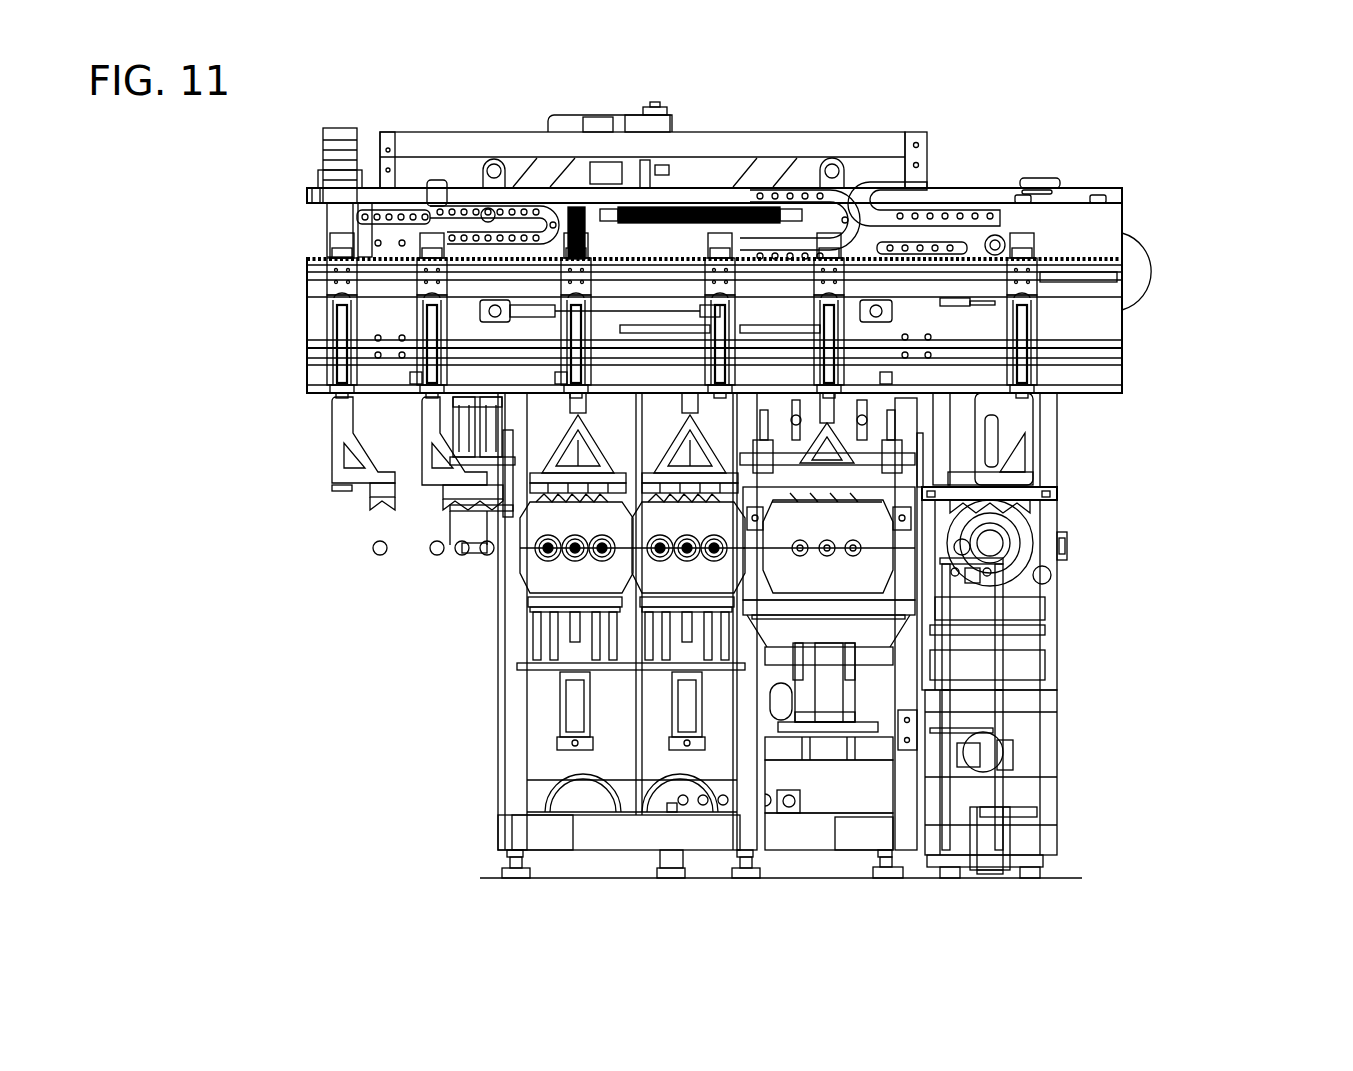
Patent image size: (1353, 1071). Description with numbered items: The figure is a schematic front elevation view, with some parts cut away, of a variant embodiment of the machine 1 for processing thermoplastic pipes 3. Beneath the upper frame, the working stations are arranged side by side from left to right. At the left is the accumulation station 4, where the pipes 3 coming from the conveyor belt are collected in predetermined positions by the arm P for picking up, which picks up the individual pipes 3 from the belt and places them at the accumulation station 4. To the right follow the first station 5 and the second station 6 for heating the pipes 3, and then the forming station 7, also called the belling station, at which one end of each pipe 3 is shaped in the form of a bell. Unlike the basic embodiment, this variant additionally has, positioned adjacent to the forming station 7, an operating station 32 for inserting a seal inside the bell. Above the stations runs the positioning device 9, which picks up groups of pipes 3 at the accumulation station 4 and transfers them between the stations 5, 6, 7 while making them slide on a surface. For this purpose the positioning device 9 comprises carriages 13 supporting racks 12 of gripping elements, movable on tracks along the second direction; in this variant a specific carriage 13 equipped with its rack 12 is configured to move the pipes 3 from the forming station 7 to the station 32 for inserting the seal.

The machine 1 is at (1177, 203).
The pipes 3 is at (370, 563).
The accumulation station 4 is at (450, 565).
The first heating station 5 is at (555, 573).
The second heating station 6 is at (675, 575).
The forming station 7 is at (843, 565).
The positioning device 9 is at (407, 450).
The rack 12 is at (1037, 505).
The carriage 13 is at (1043, 475).
The operating station for inserting a seal 32 is at (1070, 542).
The arm for picking up P is at (342, 493).